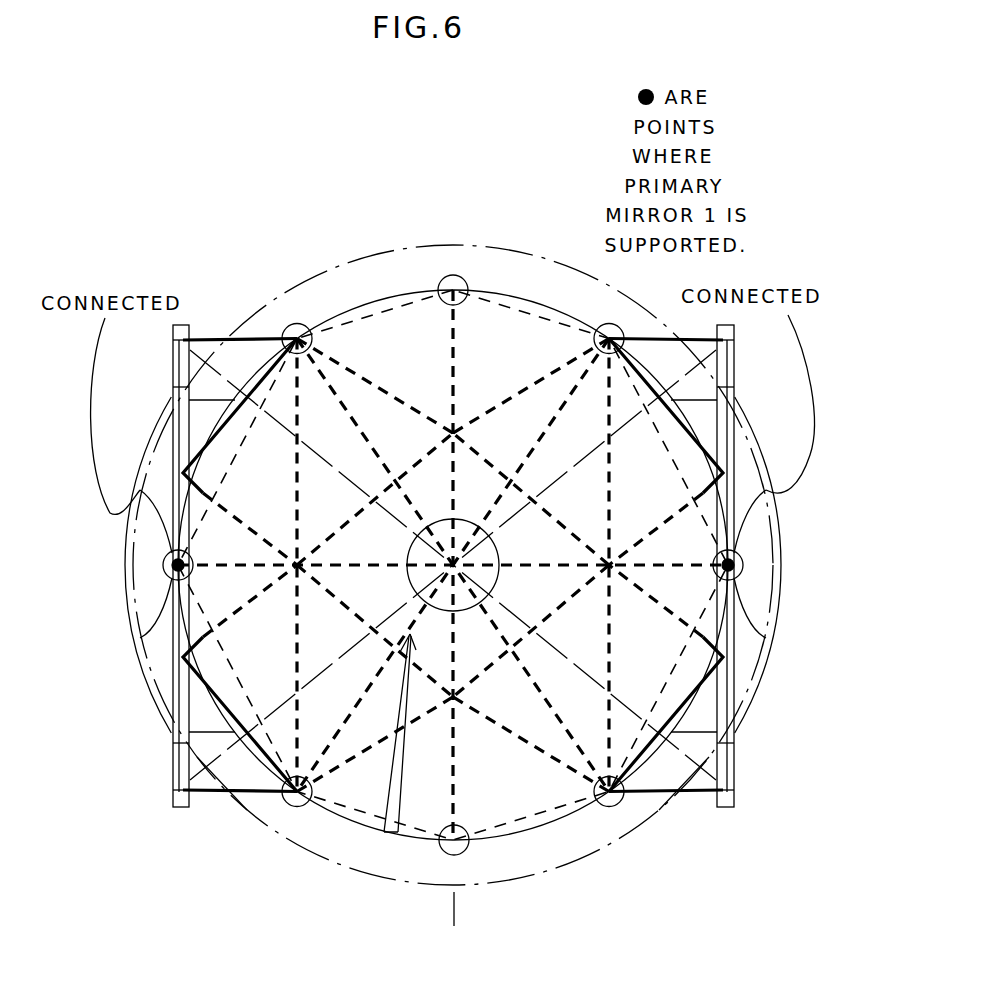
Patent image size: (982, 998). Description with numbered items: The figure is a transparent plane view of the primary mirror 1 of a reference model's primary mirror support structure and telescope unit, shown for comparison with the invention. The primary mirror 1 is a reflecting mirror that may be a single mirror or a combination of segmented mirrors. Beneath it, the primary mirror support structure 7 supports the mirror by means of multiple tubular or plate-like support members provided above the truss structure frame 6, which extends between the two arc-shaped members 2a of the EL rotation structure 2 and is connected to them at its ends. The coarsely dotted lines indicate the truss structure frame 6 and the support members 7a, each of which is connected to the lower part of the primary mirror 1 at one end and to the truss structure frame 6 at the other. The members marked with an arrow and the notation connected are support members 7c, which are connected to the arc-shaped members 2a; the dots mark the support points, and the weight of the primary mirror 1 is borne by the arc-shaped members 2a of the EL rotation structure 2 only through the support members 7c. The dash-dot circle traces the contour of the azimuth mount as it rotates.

The primary mirror 1 is at (370, 300).
The EL rotation structure 2 is at (467, 628).
The arc-shaped member 2a is at (181, 808).
The truss structure frame 6 is at (384, 832).
The primary mirror support structure 7 is at (450, 626).
The support member 7a is at (463, 852).
The support member 7c is at (127, 602).